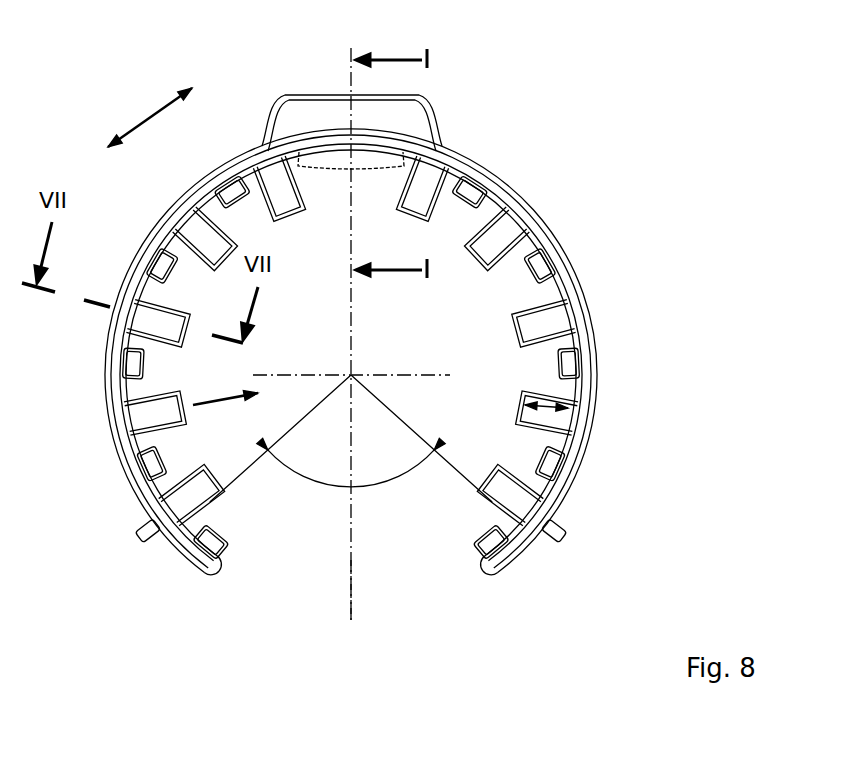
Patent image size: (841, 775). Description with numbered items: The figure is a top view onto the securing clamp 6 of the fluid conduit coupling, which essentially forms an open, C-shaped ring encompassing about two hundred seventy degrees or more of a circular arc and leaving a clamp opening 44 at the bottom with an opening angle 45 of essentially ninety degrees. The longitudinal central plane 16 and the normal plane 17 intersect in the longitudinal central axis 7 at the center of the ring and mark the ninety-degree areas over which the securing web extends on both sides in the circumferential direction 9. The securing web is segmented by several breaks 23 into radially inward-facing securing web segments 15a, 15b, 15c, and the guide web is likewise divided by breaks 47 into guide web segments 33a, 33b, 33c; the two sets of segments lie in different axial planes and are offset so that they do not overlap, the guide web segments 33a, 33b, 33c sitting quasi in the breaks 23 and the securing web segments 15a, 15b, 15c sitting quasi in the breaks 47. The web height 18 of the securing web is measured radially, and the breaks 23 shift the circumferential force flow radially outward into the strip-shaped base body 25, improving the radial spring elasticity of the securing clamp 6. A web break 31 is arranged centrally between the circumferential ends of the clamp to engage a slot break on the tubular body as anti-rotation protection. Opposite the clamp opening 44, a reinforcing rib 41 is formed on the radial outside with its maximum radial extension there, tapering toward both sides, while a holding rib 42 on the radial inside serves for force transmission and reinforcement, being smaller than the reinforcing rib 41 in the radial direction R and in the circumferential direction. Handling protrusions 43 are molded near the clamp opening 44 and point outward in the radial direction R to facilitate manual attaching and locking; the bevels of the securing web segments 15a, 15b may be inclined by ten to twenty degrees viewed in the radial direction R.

The securing clamp 6 is at (352, 313).
The longitudinal central axis 7 is at (345, 370).
The circumferential direction 9 is at (148, 115).
The securing web segment 15a is at (263, 178).
The securing web segment 15b is at (190, 237).
The securing web segment 15c is at (150, 323).
The longitudinal central plane 16 is at (350, 605).
The normal plane 17 is at (392, 365).
The web height 18 is at (548, 403).
The break 23 is at (235, 188).
The base body 25 is at (585, 443).
The web break 31 is at (407, 190).
The guide web segment 33a is at (160, 262).
The guide web segment 33b is at (140, 364).
The guide web segment 33c is at (160, 452).
The reinforcing rib 41 is at (318, 100).
The holding rib 42 is at (338, 160).
The handling protrusion 43 is at (140, 540).
The clamp opening 44 is at (378, 578).
The opening angle 45 is at (322, 480).
The break 47 is at (137, 442).
The radial direction R is at (222, 400).